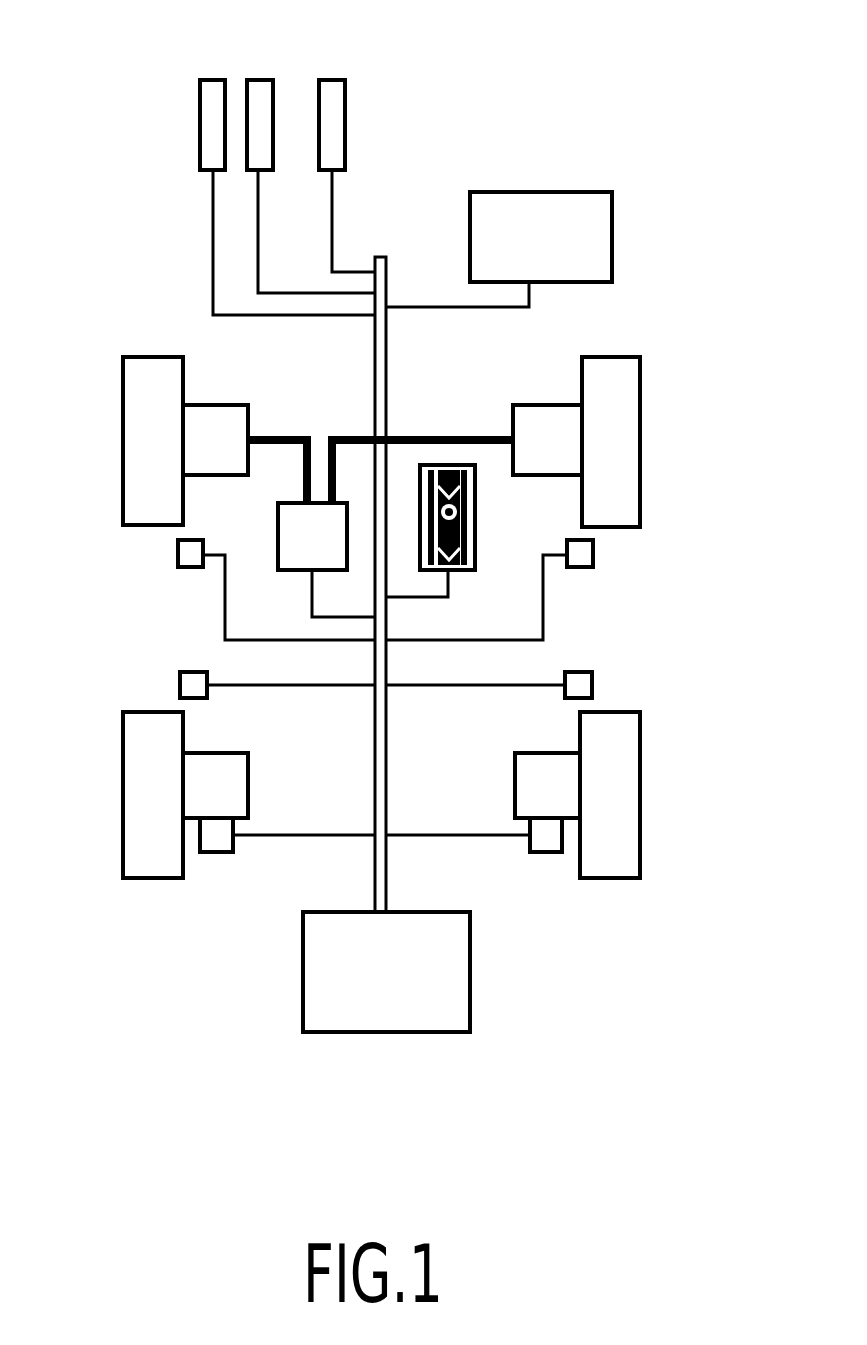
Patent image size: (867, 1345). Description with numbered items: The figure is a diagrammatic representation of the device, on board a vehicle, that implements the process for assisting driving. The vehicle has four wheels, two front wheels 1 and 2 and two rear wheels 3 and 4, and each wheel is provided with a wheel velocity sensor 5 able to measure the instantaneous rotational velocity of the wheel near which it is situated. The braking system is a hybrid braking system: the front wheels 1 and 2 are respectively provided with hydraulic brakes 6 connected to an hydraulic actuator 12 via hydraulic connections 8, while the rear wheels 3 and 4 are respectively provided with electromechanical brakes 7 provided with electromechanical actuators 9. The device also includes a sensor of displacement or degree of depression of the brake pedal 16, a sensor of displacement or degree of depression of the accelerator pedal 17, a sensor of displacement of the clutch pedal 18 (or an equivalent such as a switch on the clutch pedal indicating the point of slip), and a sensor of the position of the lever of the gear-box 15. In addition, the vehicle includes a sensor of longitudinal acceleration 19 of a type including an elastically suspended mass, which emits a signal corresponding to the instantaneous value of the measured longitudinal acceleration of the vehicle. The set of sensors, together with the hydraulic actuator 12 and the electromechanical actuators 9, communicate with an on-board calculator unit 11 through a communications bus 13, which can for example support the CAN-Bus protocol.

The front wheel 1 is at (140, 408).
The front wheel 2 is at (618, 425).
The rear wheel 3 is at (138, 778).
The rear wheel 4 is at (620, 782).
The wheel velocity sensor 5 is at (178, 553).
The hydraulic brake 6 is at (212, 405).
The electromechanical brake 7 is at (230, 770).
The hydraulic connection 8 is at (272, 437).
The electromechanical actuator 9 is at (218, 845).
The on-board calculator unit 11 is at (455, 980).
The hydraulic actuator 12 is at (285, 530).
The communications bus 13 is at (375, 722).
The gear-box lever position sensor 15 is at (612, 245).
The brake pedal displacement sensor 16 is at (333, 78).
The accelerator pedal displacement sensor 17 is at (260, 78).
The clutch pedal displacement sensor 18 is at (208, 78).
The longitudinal acceleration sensor 19 is at (478, 540).